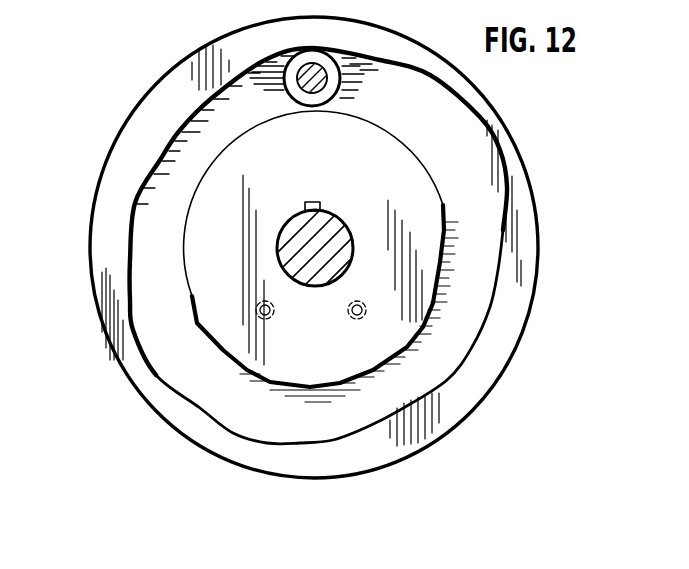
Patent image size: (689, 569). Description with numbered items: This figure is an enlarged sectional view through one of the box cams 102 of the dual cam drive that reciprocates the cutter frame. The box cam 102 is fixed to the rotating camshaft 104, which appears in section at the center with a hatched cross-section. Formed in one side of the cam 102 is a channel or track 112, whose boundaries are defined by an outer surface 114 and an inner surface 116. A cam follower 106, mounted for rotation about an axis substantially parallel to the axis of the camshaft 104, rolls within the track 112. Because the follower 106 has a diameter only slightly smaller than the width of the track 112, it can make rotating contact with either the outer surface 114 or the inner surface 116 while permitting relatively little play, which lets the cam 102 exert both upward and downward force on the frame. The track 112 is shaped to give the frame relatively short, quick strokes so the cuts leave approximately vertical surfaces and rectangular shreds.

The box cam 102 is at (537, 205).
The camshaft 104 is at (332, 218).
The cam follower 106 is at (351, 100).
The track 112 is at (477, 160).
The outer surface 114 is at (131, 308).
The inner surface 116 is at (187, 297).